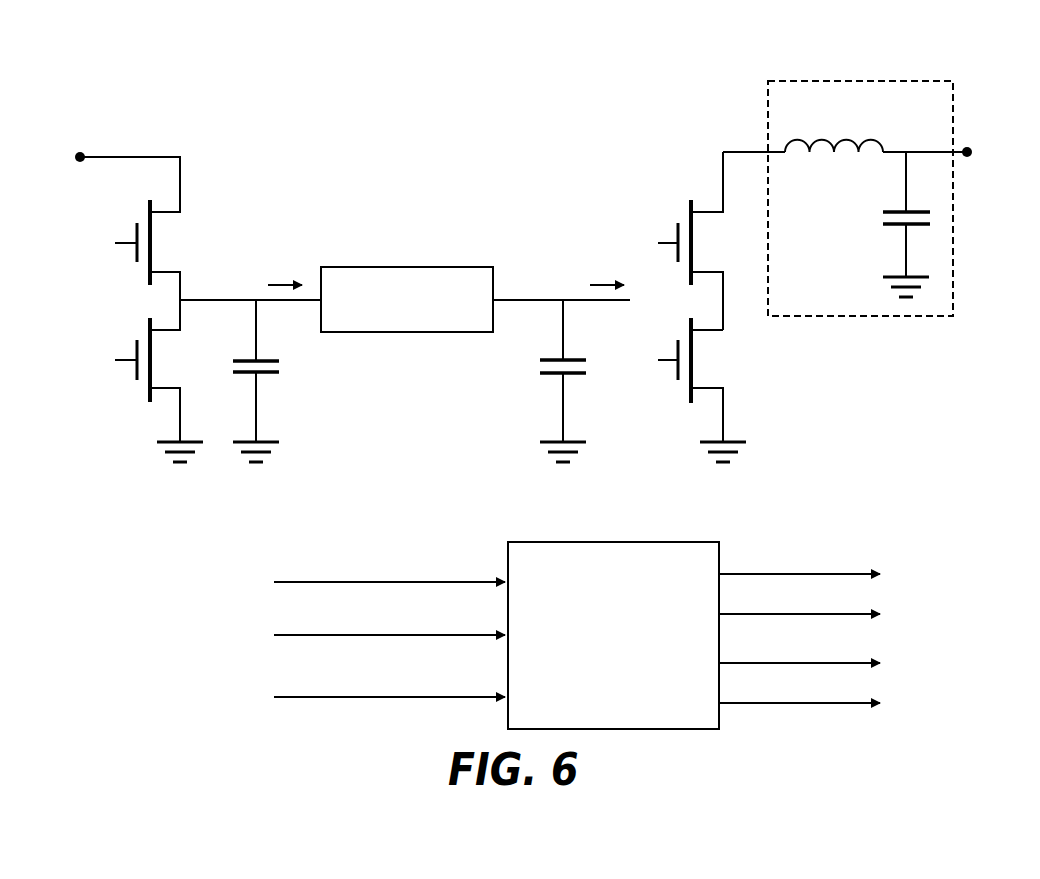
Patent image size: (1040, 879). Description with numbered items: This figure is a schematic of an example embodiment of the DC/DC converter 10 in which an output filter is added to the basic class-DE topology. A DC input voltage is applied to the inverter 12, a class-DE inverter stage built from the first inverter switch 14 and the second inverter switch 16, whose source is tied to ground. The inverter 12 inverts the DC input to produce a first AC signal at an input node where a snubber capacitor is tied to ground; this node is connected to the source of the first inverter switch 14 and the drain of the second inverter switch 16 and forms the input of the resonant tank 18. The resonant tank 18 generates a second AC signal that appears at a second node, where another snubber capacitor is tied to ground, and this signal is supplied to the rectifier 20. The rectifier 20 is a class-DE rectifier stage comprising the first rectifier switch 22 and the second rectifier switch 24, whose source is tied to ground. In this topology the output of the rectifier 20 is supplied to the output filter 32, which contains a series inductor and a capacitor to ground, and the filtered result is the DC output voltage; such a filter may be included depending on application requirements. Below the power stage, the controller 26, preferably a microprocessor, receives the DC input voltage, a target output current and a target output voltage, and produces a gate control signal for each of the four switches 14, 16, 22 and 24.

The DC/DC converter 10 is at (492, 122).
The inverter 12 is at (196, 185).
The first inverter switch 14 is at (205, 238).
The second inverter switch 16 is at (192, 375).
The resonant tank 18 is at (415, 264).
The rectifier 20 is at (689, 181).
The first rectifier switch 22 is at (733, 258).
The second rectifier switch 24 is at (755, 360).
The controller 26 is at (633, 540).
The output filter 32 is at (800, 80).